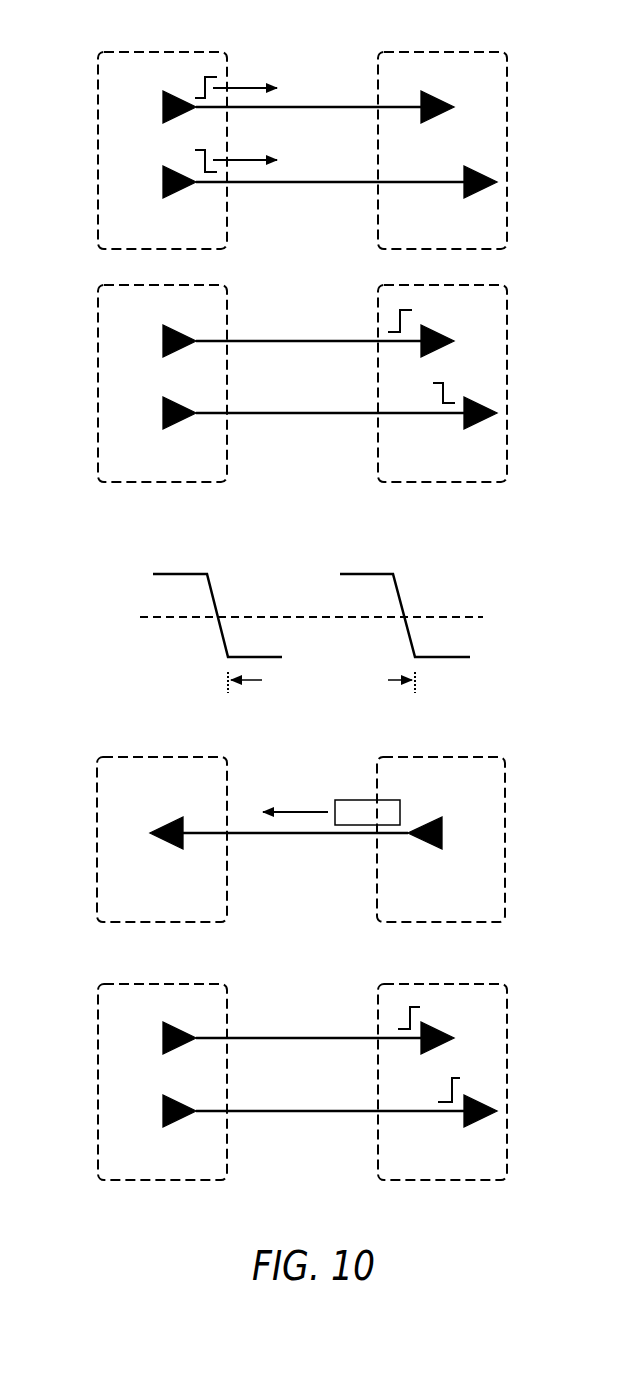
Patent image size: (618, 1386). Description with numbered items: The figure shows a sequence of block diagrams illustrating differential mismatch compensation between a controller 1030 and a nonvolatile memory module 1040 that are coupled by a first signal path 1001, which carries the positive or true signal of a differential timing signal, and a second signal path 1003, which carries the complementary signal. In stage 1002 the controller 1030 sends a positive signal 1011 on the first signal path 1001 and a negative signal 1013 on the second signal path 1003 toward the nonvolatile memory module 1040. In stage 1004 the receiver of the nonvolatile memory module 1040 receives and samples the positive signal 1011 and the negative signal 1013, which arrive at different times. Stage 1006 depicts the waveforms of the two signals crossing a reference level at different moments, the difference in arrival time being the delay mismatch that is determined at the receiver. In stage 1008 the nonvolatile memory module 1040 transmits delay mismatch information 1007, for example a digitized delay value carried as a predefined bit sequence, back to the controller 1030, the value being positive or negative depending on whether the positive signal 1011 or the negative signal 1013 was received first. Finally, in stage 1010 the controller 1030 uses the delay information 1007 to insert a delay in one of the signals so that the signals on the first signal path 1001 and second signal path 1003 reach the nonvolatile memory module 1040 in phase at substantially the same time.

The first signal path 1001 is at (294, 107).
The stage 1002 is at (57, 150).
The second signal path 1003 is at (294, 182).
The stage 1004 is at (57, 388).
The stage 1006 is at (57, 637).
The delay mismatch information 1007 is at (367, 800).
The stage 1008 is at (57, 840).
The stage 1010 is at (57, 1081).
The positive signal 1011 is at (188, 89).
The negative signal 1013 is at (188, 162).
The controller 1030 is at (145, 52).
The nonvolatile memory module 1040 is at (425, 52).